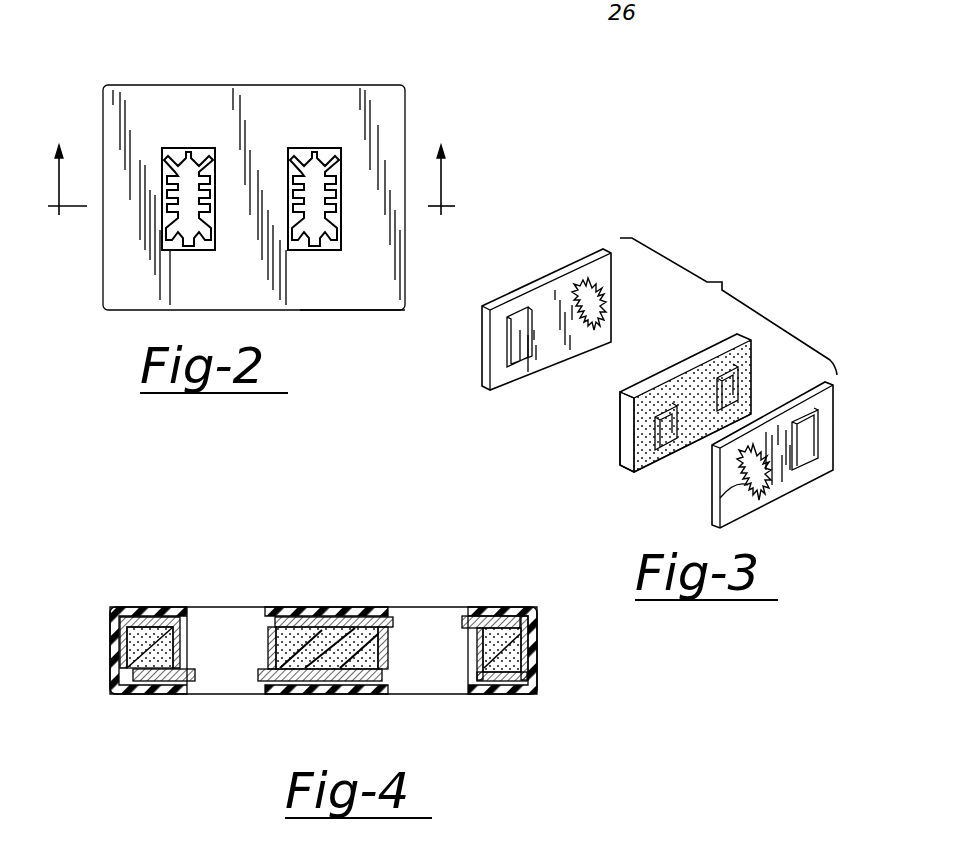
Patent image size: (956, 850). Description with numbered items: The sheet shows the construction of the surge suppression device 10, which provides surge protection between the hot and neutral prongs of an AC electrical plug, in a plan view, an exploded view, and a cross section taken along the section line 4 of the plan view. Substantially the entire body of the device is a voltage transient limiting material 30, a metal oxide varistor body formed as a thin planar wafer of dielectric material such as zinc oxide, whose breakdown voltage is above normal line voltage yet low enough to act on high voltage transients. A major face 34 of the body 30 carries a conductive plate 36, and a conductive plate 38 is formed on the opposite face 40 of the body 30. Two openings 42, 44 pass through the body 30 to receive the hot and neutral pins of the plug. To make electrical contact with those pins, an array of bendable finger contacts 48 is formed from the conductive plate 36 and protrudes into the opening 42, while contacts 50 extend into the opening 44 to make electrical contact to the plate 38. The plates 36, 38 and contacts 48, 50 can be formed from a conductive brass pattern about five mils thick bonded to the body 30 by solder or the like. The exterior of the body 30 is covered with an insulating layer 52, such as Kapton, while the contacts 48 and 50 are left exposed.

In FIG. 2, the surge suppression device 10 is at (426, 97).
In FIG. 3, the surge suppression device 10 is at (758, 293).
In FIG. 4, the surge suppression device 10 is at (307, 576).
In FIG. 2, the section line 4- 4 is at (249, 204).
In FIG. 3, the voltage transient limiting material 30 is at (622, 458).
In FIG. 4, the voltage transient limiting material 30 is at (132, 640).
In FIG. 3, the major face 34 is at (653, 453).
In FIG. 3, the conductive plate 36 is at (780, 493).
In FIG. 4, the conductive plate 36 is at (360, 607).
In FIG. 3, the conductive plate 38 is at (498, 383).
In FIG. 4, the conductive plate 38 is at (348, 692).
In FIG. 3, the opposite face 40 is at (620, 423).
In FIG. 3, the opening 42 is at (667, 400).
In FIG. 4, the opening 42 is at (430, 670).
In FIG. 3, the opening 44 is at (735, 382).
In FIG. 4, the opening 44 is at (220, 640).
In FIG. 3, the bendable finger contacts 48 is at (735, 490).
In FIG. 4, the bendable finger contacts 48 is at (263, 677).
In FIG. 3, the contacts 50 is at (598, 297).
In FIG. 4, the contacts 50 is at (393, 627).
In FIG. 2, the insulating layer 52 is at (335, 292).
In FIG. 4, the insulating layer 52 is at (110, 682).